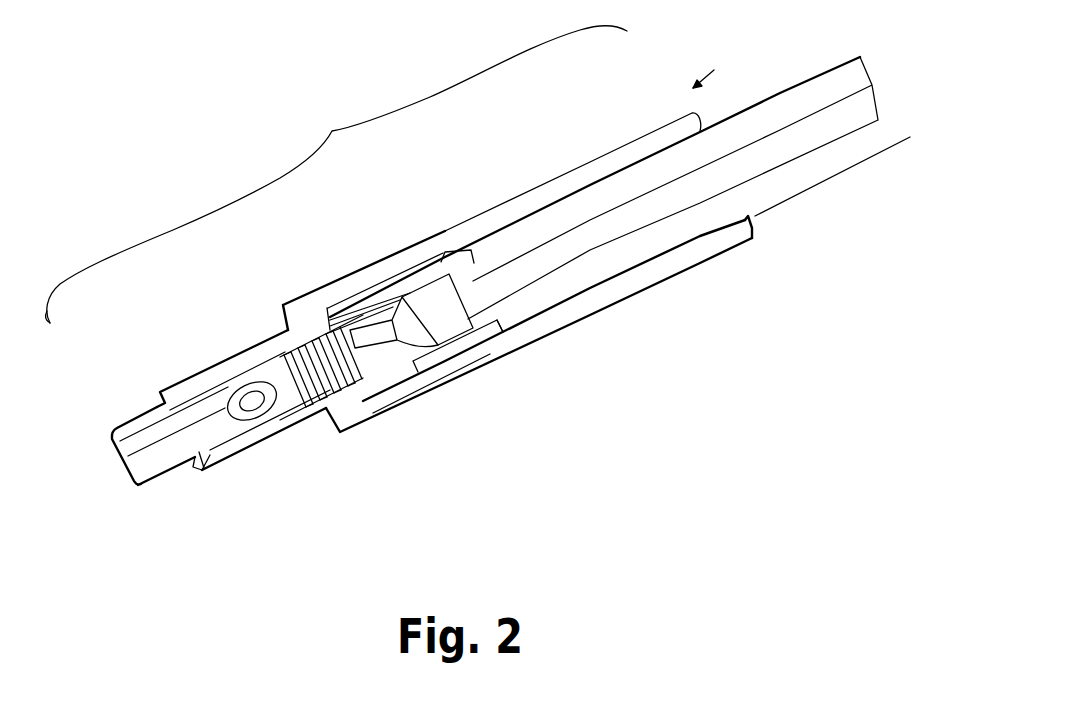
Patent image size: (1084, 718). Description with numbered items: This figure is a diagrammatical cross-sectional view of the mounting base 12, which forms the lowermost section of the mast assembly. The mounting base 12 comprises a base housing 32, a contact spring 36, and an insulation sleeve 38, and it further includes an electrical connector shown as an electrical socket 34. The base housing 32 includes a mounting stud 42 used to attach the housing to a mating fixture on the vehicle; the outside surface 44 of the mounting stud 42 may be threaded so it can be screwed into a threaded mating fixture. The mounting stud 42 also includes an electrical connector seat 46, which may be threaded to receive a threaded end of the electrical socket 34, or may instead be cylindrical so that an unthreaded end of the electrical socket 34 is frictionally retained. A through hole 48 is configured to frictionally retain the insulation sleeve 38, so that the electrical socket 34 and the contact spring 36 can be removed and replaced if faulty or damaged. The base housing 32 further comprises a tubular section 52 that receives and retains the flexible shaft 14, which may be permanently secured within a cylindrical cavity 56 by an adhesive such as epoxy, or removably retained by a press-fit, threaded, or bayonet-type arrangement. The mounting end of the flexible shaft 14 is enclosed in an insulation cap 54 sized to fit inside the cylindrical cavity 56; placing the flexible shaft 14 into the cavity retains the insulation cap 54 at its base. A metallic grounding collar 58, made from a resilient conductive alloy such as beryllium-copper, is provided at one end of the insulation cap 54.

The mounting base 12 is at (336, 174).
The flexible shaft 14 is at (762, 177).
The base housing 32 is at (443, 230).
The electrical socket 34 is at (125, 420).
The contact spring 36 is at (237, 355).
The insulation sleeve 38 is at (273, 355).
The mounting stud 42 is at (197, 478).
The outside surface 44 is at (238, 450).
The electrical connector seat 46 is at (199, 452).
The through hole 48 is at (283, 413).
The tubular section 52 is at (721, 70).
The insulation cap 54 is at (496, 360).
The cylindrical cavity 56 is at (545, 205).
The metallic grounding collar 58 is at (412, 380).